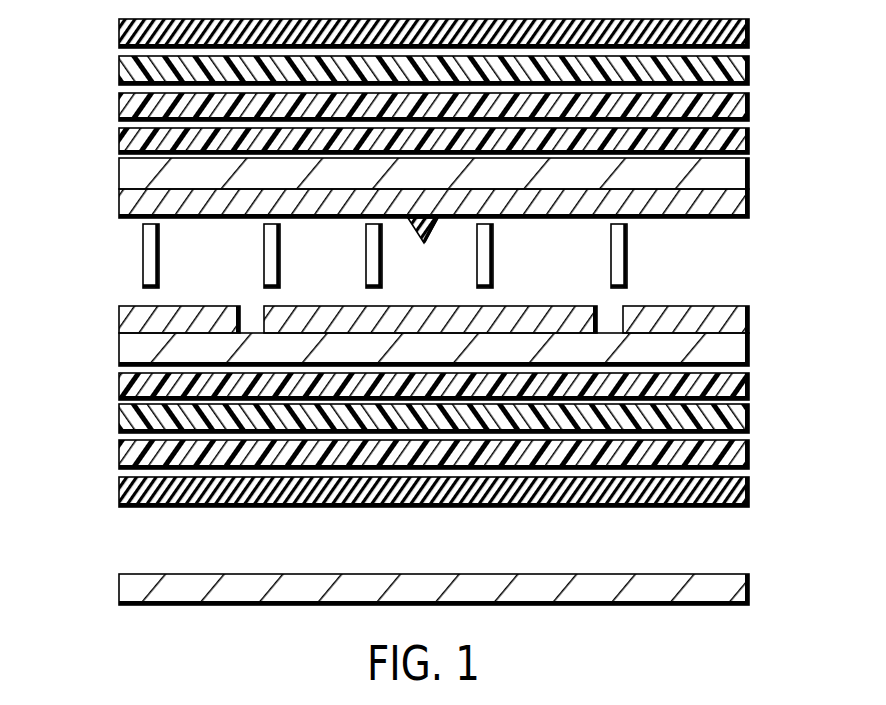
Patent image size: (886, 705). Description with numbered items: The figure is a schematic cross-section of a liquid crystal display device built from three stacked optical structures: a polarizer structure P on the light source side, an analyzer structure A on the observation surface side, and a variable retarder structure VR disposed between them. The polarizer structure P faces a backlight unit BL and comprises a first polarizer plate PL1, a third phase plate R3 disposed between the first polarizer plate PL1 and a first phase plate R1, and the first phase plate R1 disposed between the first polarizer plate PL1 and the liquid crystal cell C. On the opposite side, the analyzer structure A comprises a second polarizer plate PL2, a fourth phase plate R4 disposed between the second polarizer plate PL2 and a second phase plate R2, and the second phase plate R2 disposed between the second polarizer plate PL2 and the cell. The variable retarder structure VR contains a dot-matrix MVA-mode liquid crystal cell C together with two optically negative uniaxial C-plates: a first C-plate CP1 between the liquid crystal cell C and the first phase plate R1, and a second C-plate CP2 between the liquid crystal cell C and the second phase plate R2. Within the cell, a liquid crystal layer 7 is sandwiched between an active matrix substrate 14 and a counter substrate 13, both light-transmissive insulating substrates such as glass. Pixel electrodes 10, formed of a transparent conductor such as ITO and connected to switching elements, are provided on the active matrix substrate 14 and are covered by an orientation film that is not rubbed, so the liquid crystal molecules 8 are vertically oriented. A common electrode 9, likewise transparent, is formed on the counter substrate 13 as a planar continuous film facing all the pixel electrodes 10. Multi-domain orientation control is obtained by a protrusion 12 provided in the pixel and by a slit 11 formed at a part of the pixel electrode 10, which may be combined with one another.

The second polarizer plate PL2 is at (750, 37).
The fourth phase plate R4 is at (742, 72).
The second phase plate R2 is at (740, 107).
The second C-plate CP2 is at (748, 141).
The counter substrate 13 is at (136, 175).
The common electrode 9 is at (740, 210).
The protrusion 12 is at (438, 220).
The liquid crystal layer 7 is at (712, 247).
The liquid crystal molecules 8 is at (627, 270).
The pixel electrode 10 is at (738, 325).
The slit 11 is at (612, 325).
The active matrix substrate 14 is at (136, 355).
The first C-plate CP1 is at (750, 393).
The first phase plate R1 is at (740, 420).
The third phase plate R3 is at (742, 455).
The first polarizer plate PL1 is at (745, 492).
The backlight unit BL is at (742, 592).
The analyzer structure A is at (70, 15).
The variable retarder structure VR is at (70, 127).
The polarizer structure P is at (70, 405).
The liquid crystal cell C is at (792, 160).